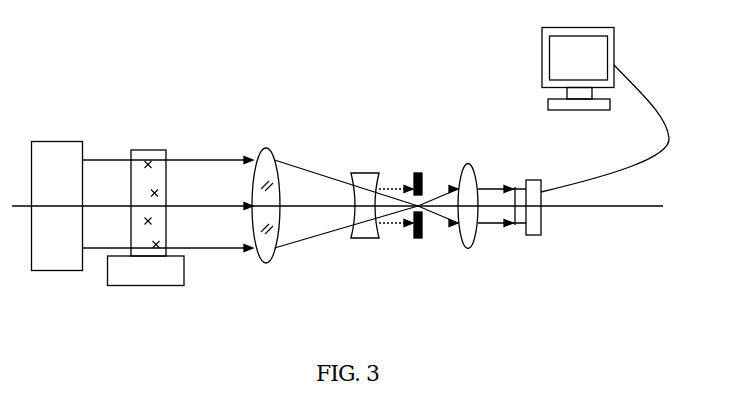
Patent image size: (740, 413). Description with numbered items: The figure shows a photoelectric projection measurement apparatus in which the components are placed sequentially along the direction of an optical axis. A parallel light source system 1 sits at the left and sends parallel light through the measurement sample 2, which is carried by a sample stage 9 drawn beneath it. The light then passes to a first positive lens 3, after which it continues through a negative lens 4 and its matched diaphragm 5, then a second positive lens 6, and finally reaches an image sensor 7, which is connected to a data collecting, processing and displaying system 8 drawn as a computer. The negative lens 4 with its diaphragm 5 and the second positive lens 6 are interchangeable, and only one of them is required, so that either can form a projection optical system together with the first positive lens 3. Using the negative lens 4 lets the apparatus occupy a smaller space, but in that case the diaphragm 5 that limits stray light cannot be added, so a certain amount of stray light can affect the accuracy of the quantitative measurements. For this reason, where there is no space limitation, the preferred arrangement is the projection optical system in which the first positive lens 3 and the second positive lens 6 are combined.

The parallel light source system 1 is at (57, 177).
The measurement sample 2 is at (148, 176).
The first positive lens 3 is at (266, 180).
The negative lens 4 is at (365, 181).
The diaphragm 5 is at (413, 175).
The second positive lens 6 is at (466, 181).
The image sensor 7 is at (530, 182).
The data collecting, processing and displaying system 8 is at (605, 106).
The sample stage 9 is at (146, 284).